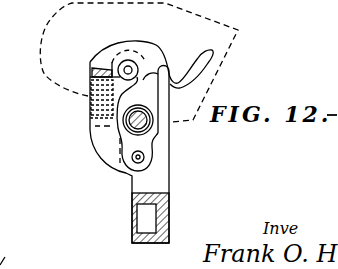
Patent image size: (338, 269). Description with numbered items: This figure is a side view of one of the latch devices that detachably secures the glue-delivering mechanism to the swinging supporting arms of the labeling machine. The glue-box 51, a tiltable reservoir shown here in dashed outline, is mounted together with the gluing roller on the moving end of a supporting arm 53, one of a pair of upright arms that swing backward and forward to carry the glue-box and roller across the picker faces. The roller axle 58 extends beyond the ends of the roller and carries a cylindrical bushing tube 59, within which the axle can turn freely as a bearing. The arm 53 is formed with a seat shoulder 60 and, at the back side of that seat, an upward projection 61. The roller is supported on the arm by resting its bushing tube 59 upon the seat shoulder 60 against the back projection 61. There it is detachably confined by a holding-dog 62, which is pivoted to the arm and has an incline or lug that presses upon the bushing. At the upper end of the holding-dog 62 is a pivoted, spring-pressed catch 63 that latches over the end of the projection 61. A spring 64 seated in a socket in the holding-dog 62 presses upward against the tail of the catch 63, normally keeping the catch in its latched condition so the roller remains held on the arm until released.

The glue-box 51 is at (139, 82).
The supporting arm 53 is at (134, 208).
The roller axle 58 is at (147, 125).
The bushing tube 59 is at (150, 131).
The seat shoulder 60 is at (154, 137).
The upward projection 61 is at (165, 96).
The holding-dog 62 is at (125, 97).
The catch 63 is at (178, 68).
The spring 64 is at (92, 74).